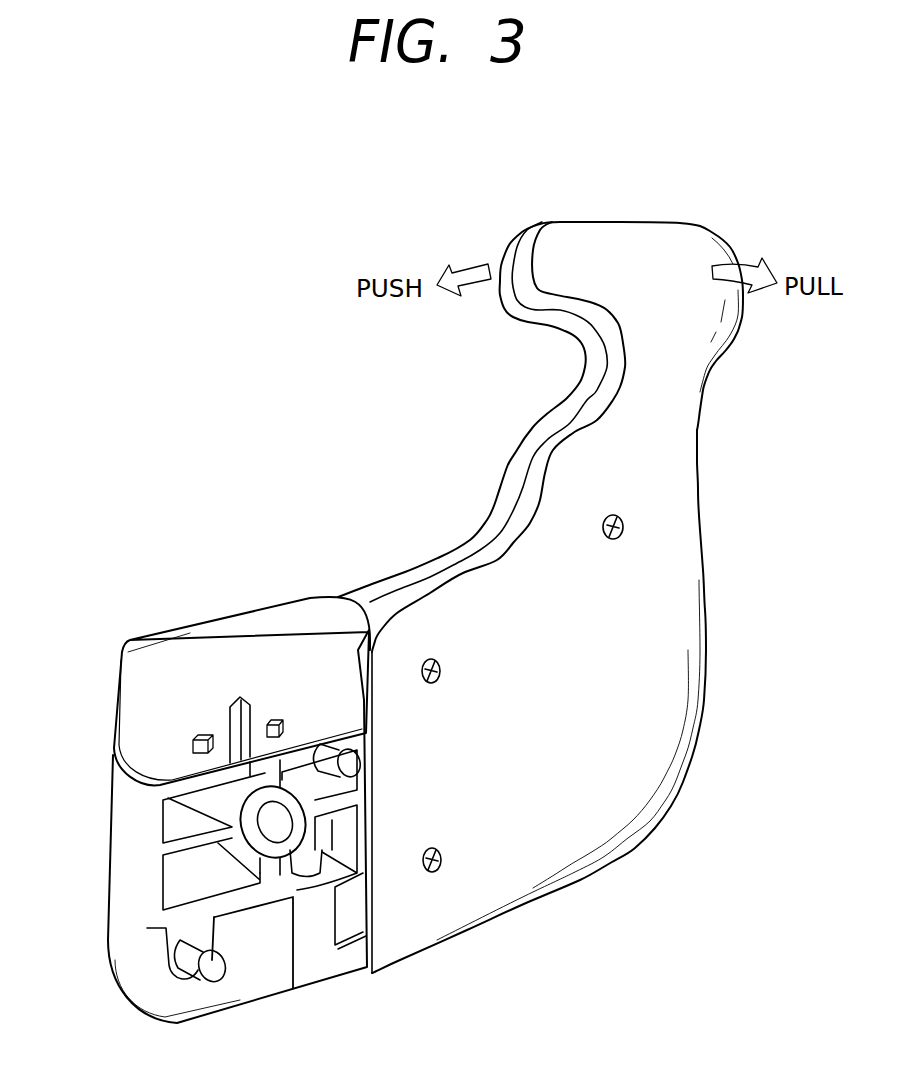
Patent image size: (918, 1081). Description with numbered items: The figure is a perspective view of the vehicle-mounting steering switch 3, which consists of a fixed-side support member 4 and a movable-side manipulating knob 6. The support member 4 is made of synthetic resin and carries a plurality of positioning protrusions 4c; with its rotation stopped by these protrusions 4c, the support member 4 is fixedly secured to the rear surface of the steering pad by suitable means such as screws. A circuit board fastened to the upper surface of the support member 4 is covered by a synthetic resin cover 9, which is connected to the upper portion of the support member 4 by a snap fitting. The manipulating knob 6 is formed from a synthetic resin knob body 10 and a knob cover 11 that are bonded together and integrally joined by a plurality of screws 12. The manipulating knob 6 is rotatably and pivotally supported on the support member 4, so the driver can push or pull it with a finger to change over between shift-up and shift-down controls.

The vehicle-mounting steering switch 3 is at (259, 518).
The support member 4 is at (127, 868).
The positioning protrusions 4c is at (212, 968).
The manipulating knob 6 is at (700, 227).
The cover 9 is at (135, 682).
The knob body 10 is at (485, 524).
The knob cover 11 is at (597, 837).
The screws 12 is at (627, 517).